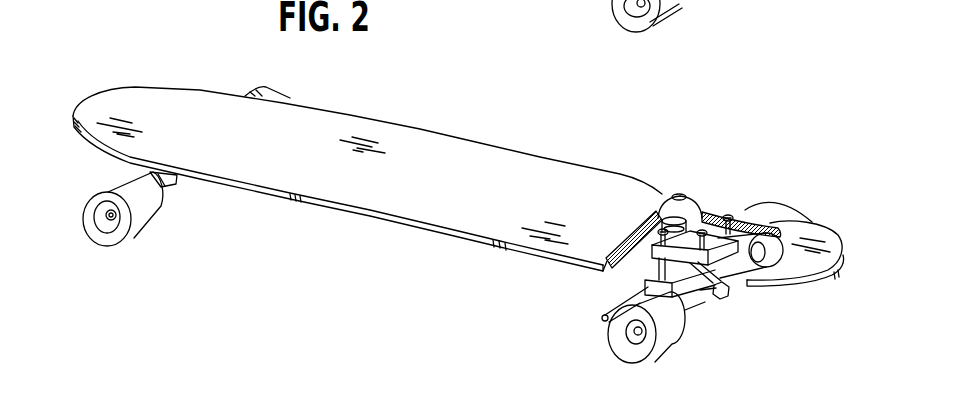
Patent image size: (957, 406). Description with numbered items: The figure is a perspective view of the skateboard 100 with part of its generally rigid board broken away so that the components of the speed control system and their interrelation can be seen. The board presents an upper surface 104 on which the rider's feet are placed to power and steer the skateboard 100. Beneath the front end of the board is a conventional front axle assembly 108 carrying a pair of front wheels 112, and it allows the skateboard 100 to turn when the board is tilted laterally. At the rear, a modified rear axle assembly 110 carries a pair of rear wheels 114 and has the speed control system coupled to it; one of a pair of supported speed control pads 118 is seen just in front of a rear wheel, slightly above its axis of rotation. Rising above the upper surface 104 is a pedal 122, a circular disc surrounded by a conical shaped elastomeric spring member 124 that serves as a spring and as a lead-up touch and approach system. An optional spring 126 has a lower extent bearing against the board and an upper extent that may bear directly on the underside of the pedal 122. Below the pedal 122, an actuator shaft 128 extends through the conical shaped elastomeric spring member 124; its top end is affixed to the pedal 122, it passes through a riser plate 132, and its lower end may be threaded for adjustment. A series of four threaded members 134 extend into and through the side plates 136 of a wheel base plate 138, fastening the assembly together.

The skateboard 100 is at (405, 400).
The upper surface 104 is at (438, 152).
The front axle assembly 108 is at (180, 197).
The modified rear axle assembly 110 is at (709, 0).
The front wheels 112 is at (265, 88).
The rear wheels 114 is at (647, 30).
The speed control pads 118 is at (603, 316).
The pedal 122 is at (686, 197).
The conical shaped elastomeric spring member 124 is at (665, 195).
The spring 126 is at (728, 214).
The actuator shaft 128 is at (730, 295).
The riser plate 132 is at (783, 227).
The threaded members 134 is at (647, 222).
The side plates 136 is at (697, 320).
The wheel base plate 138 is at (703, 300).